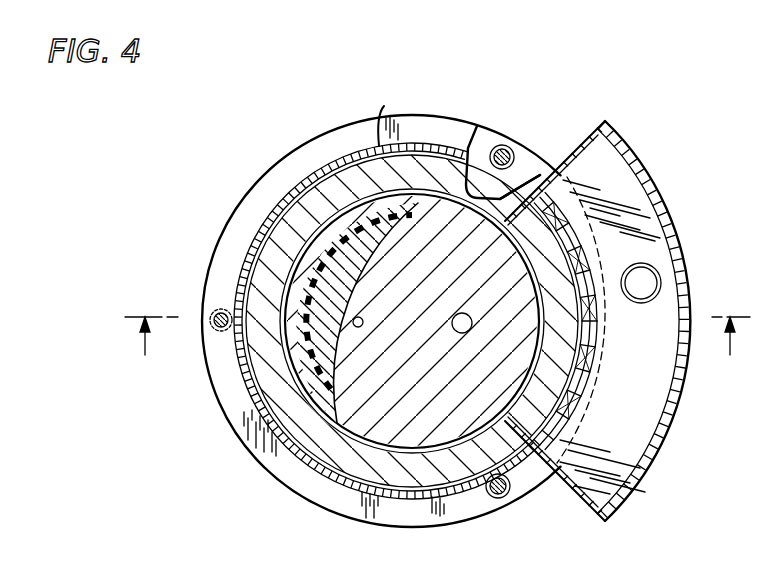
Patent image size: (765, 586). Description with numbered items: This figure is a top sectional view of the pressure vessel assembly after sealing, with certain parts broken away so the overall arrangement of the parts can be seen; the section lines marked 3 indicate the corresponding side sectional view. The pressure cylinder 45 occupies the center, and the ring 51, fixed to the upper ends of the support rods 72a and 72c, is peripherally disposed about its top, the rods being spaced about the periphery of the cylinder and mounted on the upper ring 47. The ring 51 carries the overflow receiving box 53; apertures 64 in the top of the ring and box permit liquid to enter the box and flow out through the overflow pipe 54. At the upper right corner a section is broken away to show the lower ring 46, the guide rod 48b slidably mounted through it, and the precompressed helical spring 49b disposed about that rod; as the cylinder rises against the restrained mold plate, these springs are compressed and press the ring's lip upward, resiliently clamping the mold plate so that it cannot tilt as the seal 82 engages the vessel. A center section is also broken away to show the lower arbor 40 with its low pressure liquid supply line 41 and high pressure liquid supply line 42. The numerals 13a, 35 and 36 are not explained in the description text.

The housing 13a is at (303, 260).
The spring 35 is at (350, 226).
The blade 36 is at (308, 285).
The arbor 40 is at (416, 389).
The low pressure liquid supply line 41 is at (486, 310).
The high pressure liquid supply line 42 is at (375, 308).
The pressure cylinder 45 is at (292, 216).
The lower ring 46 is at (478, 130).
The upper ring 47 is at (262, 467).
The guide rod 48b is at (515, 146).
The helical spring 49b is at (493, 147).
The ring 51 is at (296, 183).
The overflow receiving box 53 is at (656, 456).
The overflow pipe 54 is at (658, 270).
The apertures 64 is at (580, 262).
The support rod 72a is at (222, 334).
The support rod 72c is at (497, 498).
The seal 82 is at (375, 115).
The section line 3 is at (437, 354).